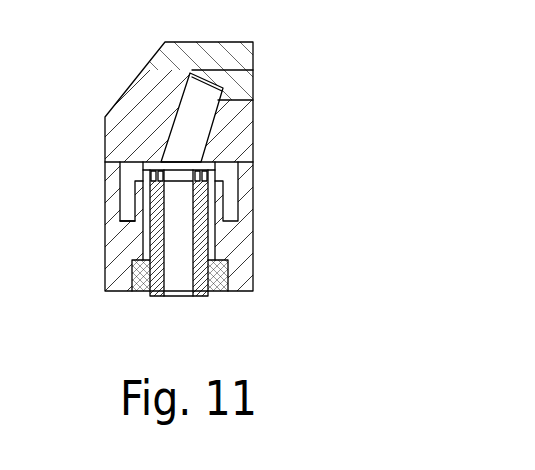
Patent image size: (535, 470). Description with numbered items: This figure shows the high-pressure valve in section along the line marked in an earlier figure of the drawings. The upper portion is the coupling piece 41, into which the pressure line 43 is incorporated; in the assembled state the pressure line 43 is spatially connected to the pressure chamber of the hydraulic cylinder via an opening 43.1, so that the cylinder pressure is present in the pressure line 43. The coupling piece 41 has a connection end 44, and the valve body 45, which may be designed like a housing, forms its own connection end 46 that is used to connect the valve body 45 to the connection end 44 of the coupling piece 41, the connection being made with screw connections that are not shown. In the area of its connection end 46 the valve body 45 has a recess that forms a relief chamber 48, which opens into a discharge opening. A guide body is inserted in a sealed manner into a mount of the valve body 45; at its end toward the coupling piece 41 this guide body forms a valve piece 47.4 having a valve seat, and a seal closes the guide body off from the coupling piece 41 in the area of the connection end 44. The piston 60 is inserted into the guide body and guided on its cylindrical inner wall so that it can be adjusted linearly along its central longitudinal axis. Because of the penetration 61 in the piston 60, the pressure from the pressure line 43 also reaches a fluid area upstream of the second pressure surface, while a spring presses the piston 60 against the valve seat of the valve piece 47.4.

The coupling piece 41 is at (150, 80).
The pressure line 43 is at (240, 80).
The opening 43.1 is at (256, 83).
The connection end 44 is at (120, 168).
The valve body 45 is at (243, 253).
The connection end 46 is at (243, 160).
The valve piece 47.4 is at (150, 158).
The relief chamber 48 is at (125, 213).
The piston 60 is at (157, 265).
The penetration 61 is at (175, 275).